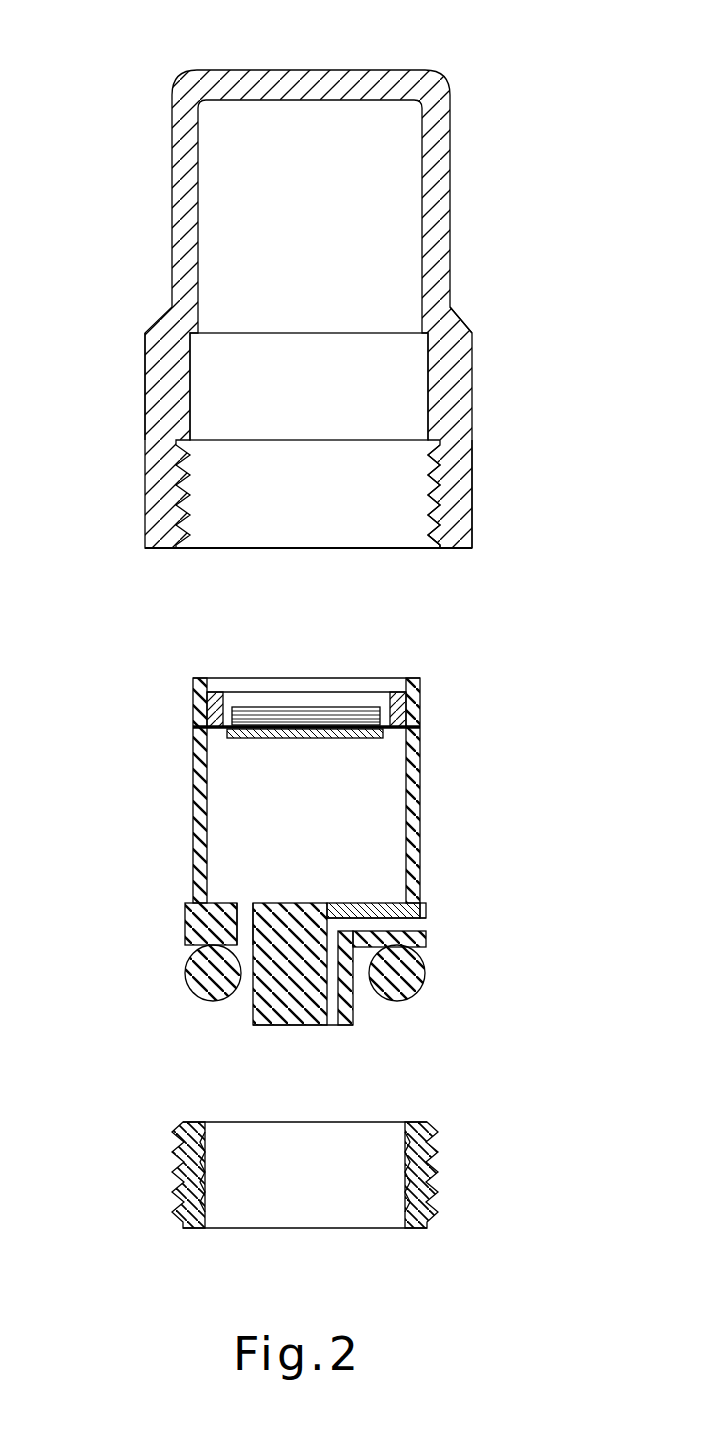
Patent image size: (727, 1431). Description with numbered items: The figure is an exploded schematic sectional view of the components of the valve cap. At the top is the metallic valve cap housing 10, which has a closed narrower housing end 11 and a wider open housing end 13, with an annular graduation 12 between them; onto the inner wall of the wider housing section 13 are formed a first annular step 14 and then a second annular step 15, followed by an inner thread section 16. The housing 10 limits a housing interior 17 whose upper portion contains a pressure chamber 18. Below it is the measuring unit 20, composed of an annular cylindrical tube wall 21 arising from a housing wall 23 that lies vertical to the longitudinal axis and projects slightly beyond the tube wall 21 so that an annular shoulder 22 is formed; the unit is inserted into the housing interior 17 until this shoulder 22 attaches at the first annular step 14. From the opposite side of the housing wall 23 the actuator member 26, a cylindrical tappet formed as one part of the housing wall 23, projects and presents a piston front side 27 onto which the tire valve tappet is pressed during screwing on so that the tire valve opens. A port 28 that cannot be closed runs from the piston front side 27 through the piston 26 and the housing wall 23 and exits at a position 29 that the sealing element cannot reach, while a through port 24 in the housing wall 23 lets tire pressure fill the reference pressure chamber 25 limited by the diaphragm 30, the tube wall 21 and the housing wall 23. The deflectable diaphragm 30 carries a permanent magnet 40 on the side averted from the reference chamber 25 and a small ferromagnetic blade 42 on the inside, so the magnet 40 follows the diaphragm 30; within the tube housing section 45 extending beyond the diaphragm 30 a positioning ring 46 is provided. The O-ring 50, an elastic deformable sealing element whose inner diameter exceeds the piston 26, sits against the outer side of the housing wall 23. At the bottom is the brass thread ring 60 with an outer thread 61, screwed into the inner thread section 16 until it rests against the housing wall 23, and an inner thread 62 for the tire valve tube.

The valve cap housing 10 is at (515, 224).
The closed narrower housing end 11 is at (322, 72).
The annular graduation 12 is at (462, 320).
The wider open housing end 13 is at (466, 470).
The first annular step 14 is at (425, 350).
The second annular step 15 is at (432, 443).
The inner thread section 16 is at (432, 505).
The housing interior 17 is at (228, 358).
The pressure chamber 18 is at (316, 221).
The measuring unit 20 is at (493, 818).
The tube wall 21 is at (420, 787).
The annular shoulder 22 is at (186, 900).
The housing wall 23 is at (370, 906).
The through port 24 is at (245, 900).
The reference pressure chamber 25 is at (309, 819).
The actuator member 26 is at (258, 1012).
The piston front side 27 is at (290, 1030).
The port 28 is at (415, 924).
The exit position 29 is at (430, 912).
The diaphragm 30 is at (207, 750).
The permanent magnet 40 is at (310, 710).
The small blade 42 is at (295, 738).
The tube housing section 45 is at (200, 690).
The positioning ring 46 is at (226, 678).
The O-ring 50 is at (423, 985).
The thread ring 60 is at (133, 1143).
The outer thread 61 is at (175, 1165).
The inner thread 62 is at (205, 1157).